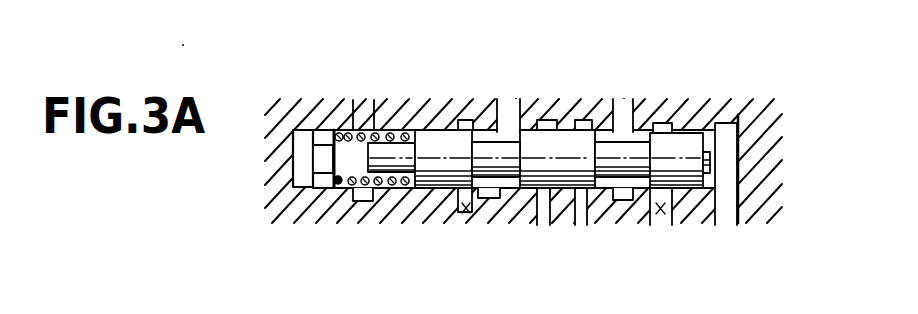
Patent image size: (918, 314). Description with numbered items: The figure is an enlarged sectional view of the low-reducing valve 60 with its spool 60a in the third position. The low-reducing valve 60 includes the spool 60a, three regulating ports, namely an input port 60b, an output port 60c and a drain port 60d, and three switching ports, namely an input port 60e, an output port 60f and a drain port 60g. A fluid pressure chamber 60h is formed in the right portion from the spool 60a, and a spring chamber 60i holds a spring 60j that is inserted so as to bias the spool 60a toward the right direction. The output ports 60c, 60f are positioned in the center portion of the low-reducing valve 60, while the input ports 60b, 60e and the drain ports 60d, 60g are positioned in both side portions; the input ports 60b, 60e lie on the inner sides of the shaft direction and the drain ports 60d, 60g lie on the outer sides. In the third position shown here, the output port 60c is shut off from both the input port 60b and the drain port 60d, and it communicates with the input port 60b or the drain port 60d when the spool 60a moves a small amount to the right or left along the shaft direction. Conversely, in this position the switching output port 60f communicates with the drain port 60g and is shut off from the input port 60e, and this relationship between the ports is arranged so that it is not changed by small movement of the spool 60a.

The low-reducing valve 60 is at (320, 47).
The spool 60a is at (565, 148).
The input port 60b is at (586, 200).
The output port 60c is at (629, 128).
The drain port 60d is at (664, 214).
The input port 60e is at (540, 204).
The output port 60f is at (510, 128).
The drain port 60g is at (467, 213).
The fluid pressure chamber 60h is at (725, 138).
The spring chamber 60i is at (340, 161).
The spring 60j is at (407, 128).